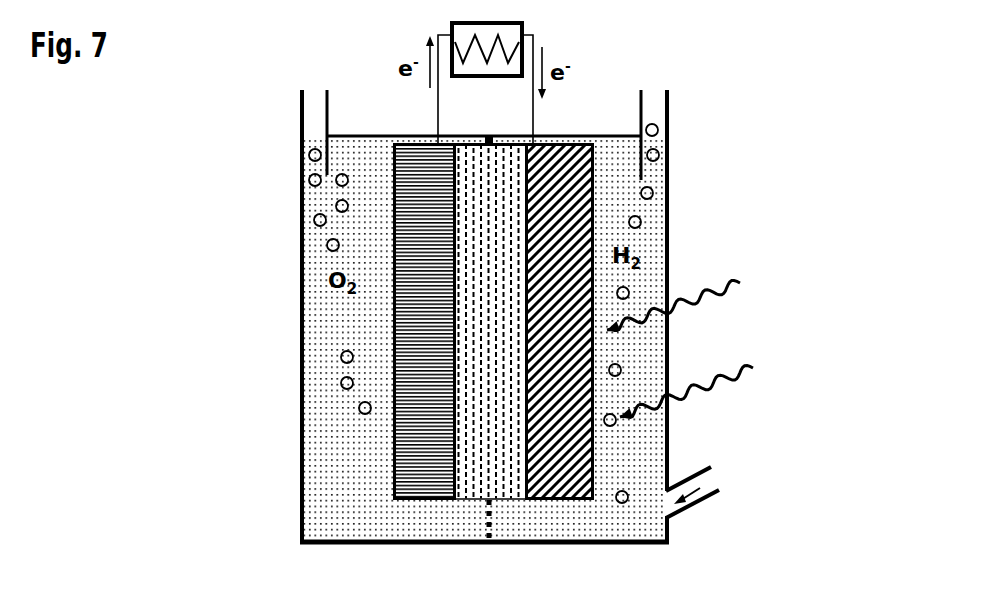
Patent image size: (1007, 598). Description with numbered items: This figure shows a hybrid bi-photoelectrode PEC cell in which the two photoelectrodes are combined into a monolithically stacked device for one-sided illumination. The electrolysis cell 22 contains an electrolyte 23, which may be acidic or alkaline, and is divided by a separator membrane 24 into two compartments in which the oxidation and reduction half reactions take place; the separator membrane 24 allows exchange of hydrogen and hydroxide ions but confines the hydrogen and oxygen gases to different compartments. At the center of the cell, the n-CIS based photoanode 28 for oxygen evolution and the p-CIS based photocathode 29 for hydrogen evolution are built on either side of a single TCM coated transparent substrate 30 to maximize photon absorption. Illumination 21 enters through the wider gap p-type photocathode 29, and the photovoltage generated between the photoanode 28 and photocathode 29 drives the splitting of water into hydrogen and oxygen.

The illumination 21 is at (727, 282).
The electrolysis cell 22 is at (668, 222).
The electrolyte 23 is at (650, 363).
The separator membrane 24 is at (490, 535).
The photoanode 28 is at (412, 384).
The photocathode 29 is at (577, 458).
The TCM coated transparent substrate 30 is at (490, 267).